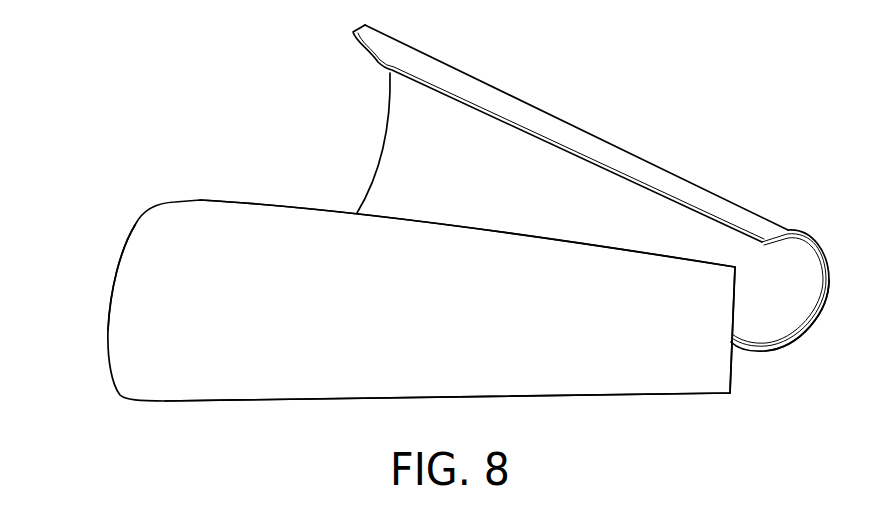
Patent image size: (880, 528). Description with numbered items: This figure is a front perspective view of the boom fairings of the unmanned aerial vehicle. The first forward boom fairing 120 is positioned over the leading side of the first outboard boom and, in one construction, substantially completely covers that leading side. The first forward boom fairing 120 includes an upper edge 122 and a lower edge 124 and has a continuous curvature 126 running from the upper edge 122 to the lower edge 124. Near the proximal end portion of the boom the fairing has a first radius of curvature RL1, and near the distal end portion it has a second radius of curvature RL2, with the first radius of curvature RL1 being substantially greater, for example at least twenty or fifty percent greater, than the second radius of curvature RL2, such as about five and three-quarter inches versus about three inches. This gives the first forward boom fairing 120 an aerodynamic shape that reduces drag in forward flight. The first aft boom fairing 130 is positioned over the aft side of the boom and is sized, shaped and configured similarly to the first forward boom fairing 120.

The first forward boom fairing 120 is at (107, 328).
The upper edge 122 is at (205, 200).
The lower edge 124 is at (733, 377).
The continuous curvature 126 is at (350, 379).
The first aft boom fairing 130 is at (574, 125).
The first radius of curvature RL1 is at (117, 262).
The second radius of curvature RL2 is at (733, 315).